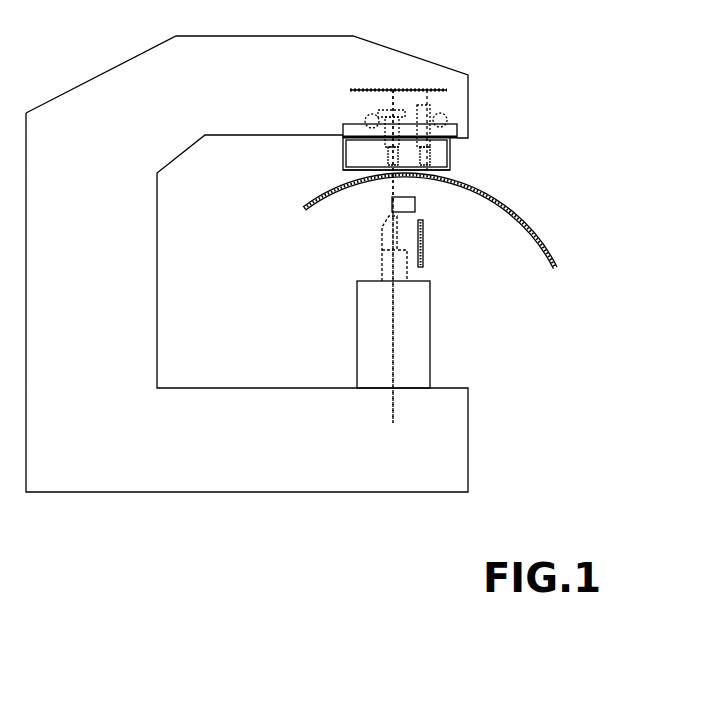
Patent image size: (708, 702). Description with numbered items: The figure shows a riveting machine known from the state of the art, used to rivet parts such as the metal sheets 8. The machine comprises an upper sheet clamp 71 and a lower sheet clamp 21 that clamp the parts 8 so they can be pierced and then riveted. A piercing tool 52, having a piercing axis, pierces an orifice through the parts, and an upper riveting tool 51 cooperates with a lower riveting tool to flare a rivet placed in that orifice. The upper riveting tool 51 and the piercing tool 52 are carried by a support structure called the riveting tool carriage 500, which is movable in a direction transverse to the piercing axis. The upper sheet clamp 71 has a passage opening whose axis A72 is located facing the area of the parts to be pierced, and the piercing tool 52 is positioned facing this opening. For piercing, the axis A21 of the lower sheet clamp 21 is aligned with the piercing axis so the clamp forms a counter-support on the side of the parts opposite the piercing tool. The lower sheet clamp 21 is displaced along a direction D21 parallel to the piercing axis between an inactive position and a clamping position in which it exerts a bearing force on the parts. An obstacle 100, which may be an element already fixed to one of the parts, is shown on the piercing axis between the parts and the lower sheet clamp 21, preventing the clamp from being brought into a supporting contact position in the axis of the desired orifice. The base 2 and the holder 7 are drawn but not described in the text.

The support base 2 is at (437, 270).
The holder 7 is at (390, 168).
The metal sheets 8 is at (522, 236).
The lower sheet clamp 21 is at (380, 250).
The upper riveting tool 51 is at (390, 113).
The piercing tool 52 is at (438, 103).
The upper sheet clamp 71 is at (450, 165).
The obstacle 100 is at (416, 200).
The riveting tool carriage 500 is at (456, 133).
The axis of the lower sheet clamp A21 is at (393, 363).
The axis of the passage orifice A72 is at (395, 190).
The direction of displacement of the lower sheet clamp D21 is at (423, 250).